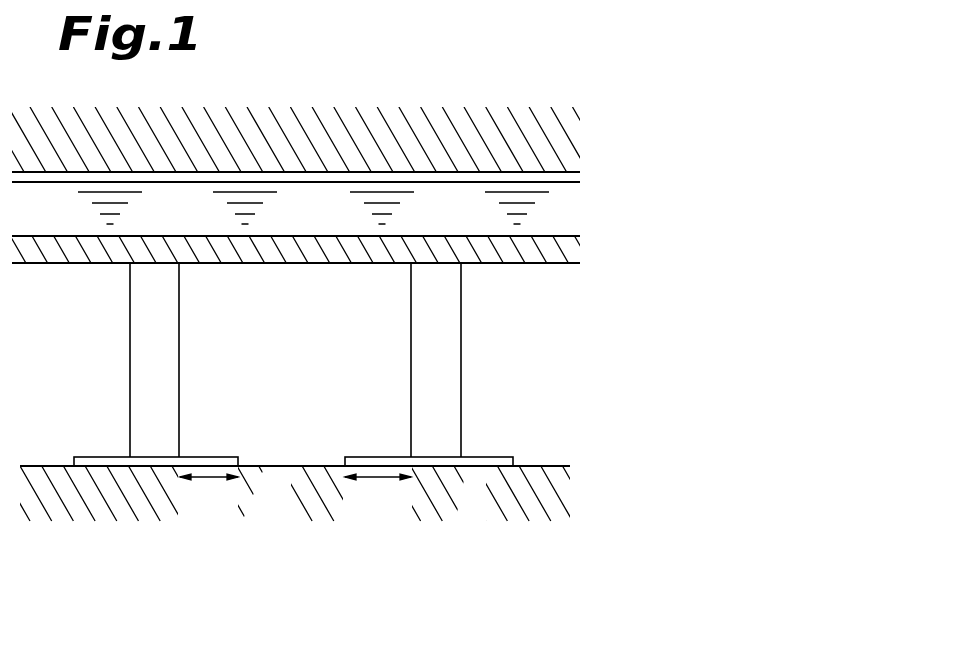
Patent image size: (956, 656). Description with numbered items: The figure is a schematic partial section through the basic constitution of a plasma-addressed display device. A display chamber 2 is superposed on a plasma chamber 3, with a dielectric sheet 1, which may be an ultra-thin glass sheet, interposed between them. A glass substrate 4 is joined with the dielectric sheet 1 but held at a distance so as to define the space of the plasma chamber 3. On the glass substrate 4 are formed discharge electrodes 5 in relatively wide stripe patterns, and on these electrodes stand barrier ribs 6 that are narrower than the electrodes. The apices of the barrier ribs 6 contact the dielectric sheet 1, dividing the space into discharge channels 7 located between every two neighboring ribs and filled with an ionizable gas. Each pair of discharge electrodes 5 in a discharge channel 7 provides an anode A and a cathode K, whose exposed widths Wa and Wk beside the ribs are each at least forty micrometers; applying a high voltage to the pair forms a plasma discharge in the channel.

The dielectric sheet 1 is at (417, 267).
The display chamber 2 is at (592, 237).
The plasma chamber 3 is at (593, 512).
The glass substrate 4 is at (545, 505).
The discharge electrodes 5 is at (499, 457).
The barrier ribs 6 is at (452, 425).
The discharge channels 7 is at (307, 382).